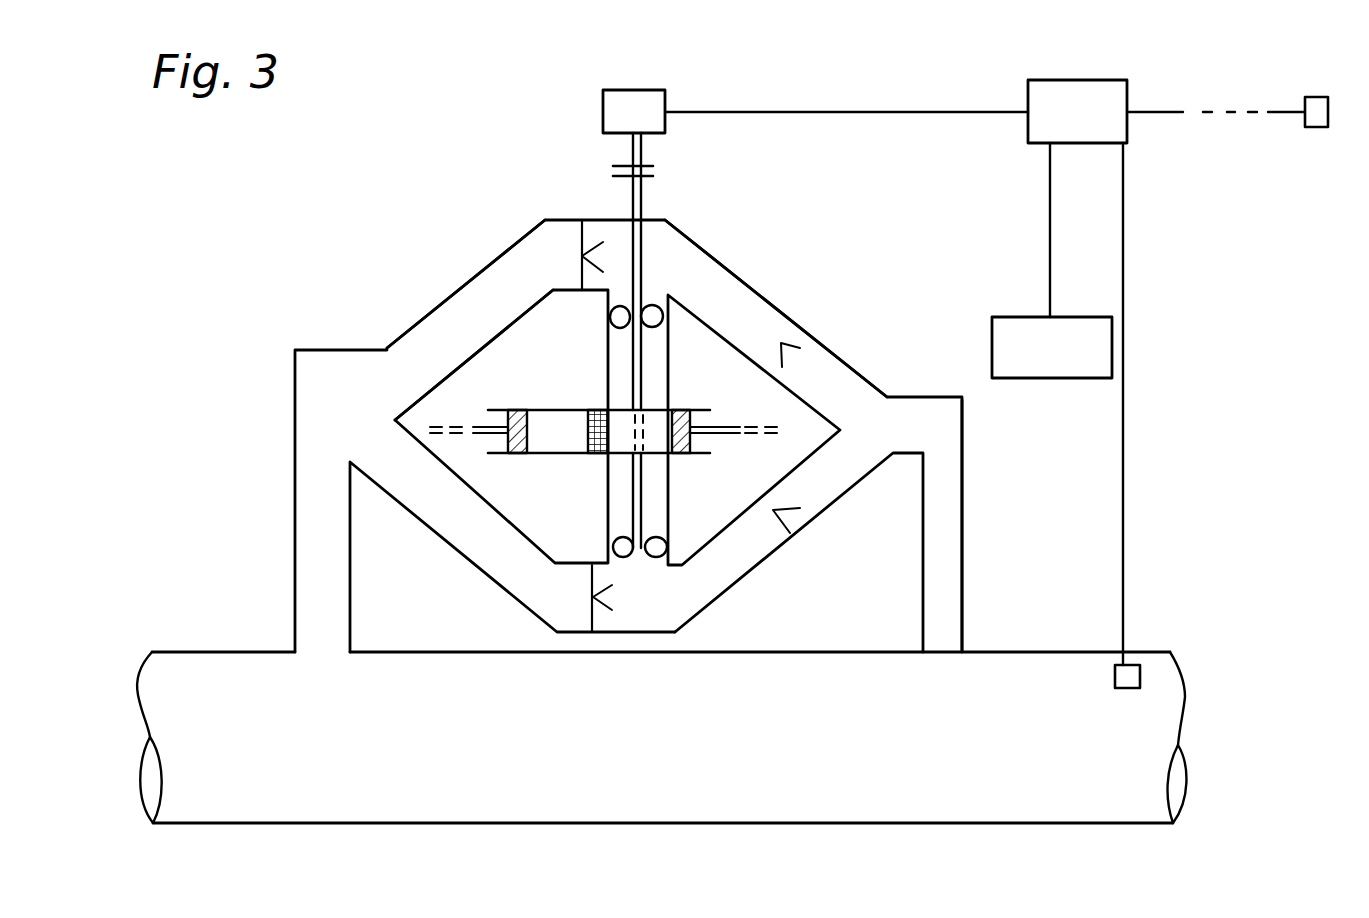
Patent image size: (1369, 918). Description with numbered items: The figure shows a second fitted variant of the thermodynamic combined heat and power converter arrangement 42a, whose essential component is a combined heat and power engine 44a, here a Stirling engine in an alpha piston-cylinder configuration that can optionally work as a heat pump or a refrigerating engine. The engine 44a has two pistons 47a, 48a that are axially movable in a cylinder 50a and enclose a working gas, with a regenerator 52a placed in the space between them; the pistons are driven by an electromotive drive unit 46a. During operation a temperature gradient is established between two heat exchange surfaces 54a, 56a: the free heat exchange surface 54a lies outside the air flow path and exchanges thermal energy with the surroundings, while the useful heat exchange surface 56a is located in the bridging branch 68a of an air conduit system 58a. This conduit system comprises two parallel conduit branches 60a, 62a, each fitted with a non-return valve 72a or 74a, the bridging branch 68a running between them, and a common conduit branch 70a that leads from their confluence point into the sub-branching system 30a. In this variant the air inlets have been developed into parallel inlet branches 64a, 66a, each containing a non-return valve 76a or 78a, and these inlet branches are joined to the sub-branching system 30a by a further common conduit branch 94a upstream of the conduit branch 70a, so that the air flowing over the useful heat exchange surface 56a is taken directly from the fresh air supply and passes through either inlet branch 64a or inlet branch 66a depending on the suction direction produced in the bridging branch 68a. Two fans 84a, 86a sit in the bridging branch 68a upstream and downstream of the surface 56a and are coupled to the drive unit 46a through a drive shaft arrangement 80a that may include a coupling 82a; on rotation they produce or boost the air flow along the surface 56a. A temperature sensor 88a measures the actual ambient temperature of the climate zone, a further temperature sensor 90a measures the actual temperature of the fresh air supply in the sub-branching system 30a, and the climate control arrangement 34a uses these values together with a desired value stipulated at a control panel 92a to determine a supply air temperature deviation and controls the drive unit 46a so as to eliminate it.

The sub-branching system 30a is at (183, 652).
The climate control arrangement 34a is at (1073, 80).
The thermodynamic combined heat and power converter arrangement 42a is at (523, 397).
The combined heat and power engine 44a is at (497, 457).
The electromotive drive unit 46a is at (632, 83).
The piston 47a is at (518, 400).
The piston 48a is at (693, 392).
The cylinder 50a is at (697, 457).
The regenerator 52a is at (588, 455).
The heat exchange surface 54a is at (560, 403).
The useful heat exchange surface 56a is at (652, 405).
The air conduit system 58a is at (868, 373).
The parallel conduit branch 60a is at (700, 248).
The parallel conduit branch 62a is at (740, 580).
The air inlet branch 64a is at (505, 252).
The air inlet branch 66a is at (513, 598).
The bridging branch 68a is at (680, 507).
The common conduit branch 70a is at (968, 547).
The non-return valve 72a is at (800, 348).
The non-return valve 74a is at (790, 533).
The non-return valve 76a is at (603, 242).
The non-return valve 78a is at (612, 610).
The drive shaft arrangement 80a is at (643, 197).
The coupling 82a is at (647, 160).
The fan 84a is at (652, 300).
The fan 86a is at (653, 560).
The temperature sensor 88a is at (1317, 130).
The temperature sensor 90a is at (1145, 675).
The control panel 92a is at (1075, 380).
The further common conduit branch 94a is at (295, 463).